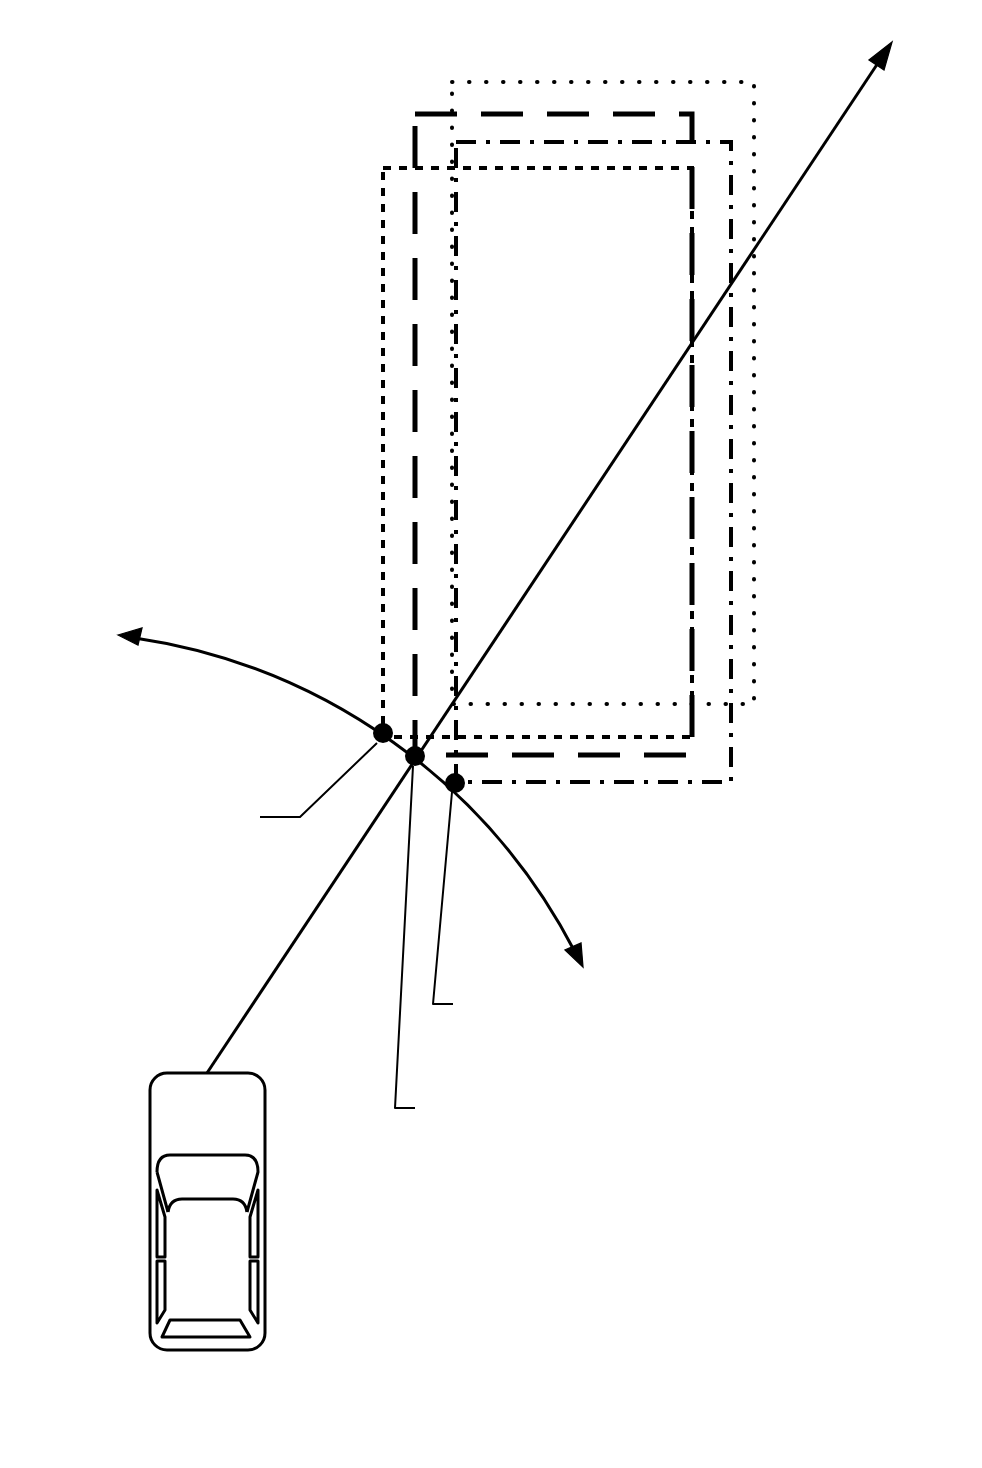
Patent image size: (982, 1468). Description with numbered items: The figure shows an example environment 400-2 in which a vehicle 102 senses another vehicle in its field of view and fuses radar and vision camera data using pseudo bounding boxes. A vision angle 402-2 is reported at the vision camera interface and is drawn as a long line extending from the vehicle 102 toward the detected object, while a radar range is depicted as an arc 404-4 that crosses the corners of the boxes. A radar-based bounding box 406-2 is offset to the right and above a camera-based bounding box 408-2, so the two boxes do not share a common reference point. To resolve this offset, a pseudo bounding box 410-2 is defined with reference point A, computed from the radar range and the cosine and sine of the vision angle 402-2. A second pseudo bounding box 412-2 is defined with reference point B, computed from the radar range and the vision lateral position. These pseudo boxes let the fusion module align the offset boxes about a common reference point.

The environment 400-2 is at (133, 52).
The vehicle 102 is at (264, 1205).
The vision angle 402-2 is at (277, 965).
The azimuth arc 404-4 is at (232, 657).
The radar-based bounding box 406-2 is at (382, 448).
The camera-based bounding box 408-2 is at (462, 80).
The pseudo bounding box 410-2 is at (415, 113).
The pseudo bounding box 412-2 is at (592, 782).